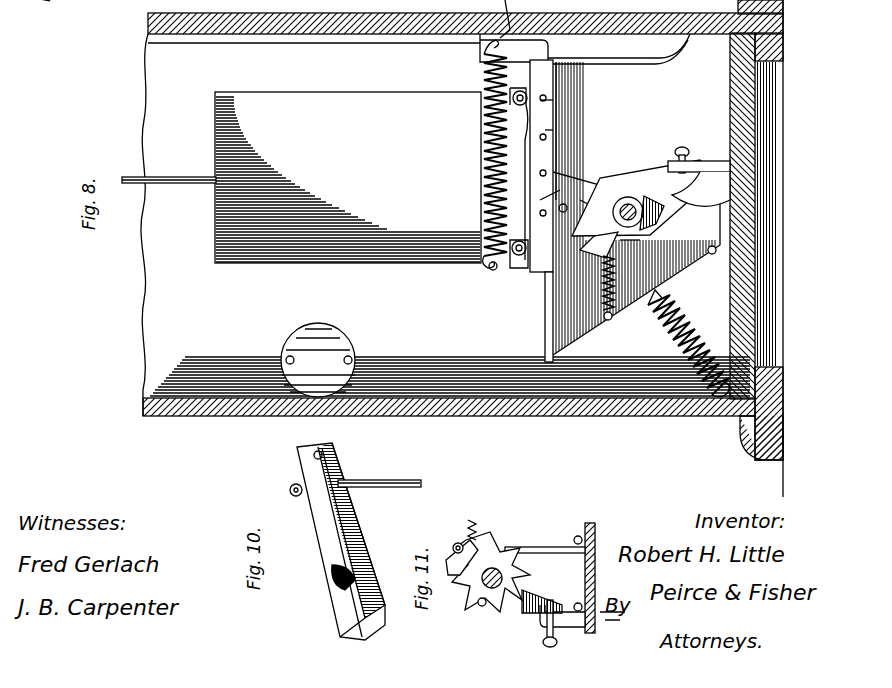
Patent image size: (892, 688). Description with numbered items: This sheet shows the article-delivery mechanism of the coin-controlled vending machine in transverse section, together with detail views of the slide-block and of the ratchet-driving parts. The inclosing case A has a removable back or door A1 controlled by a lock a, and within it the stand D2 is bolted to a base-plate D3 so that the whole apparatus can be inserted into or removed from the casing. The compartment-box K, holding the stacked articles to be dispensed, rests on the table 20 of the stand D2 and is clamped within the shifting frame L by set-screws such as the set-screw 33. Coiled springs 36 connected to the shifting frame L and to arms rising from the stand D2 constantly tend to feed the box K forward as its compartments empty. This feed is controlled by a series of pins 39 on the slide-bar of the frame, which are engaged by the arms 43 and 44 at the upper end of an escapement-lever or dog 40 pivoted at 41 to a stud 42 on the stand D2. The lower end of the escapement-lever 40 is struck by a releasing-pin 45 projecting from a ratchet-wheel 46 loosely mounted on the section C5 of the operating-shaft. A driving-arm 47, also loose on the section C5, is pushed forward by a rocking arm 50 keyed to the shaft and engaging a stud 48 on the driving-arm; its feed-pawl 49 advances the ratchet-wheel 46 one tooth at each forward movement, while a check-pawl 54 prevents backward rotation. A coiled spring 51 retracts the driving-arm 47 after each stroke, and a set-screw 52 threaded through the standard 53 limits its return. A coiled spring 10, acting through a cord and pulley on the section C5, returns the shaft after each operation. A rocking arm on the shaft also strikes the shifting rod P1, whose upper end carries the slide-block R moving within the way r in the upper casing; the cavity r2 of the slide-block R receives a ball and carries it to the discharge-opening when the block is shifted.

In FIG. 8, the body of the inclosing case A is at (240, 416).
In FIG. 8, the removable back or door A1 is at (215, 326).
In FIG. 8, the lock a is at (318, 360).
In FIG. 8, the compartment-box K is at (348, 177).
In FIG. 8, the shifting rod P1 is at (180, 176).
In FIG. 10, the shifting rod P1 is at (372, 480).
In FIG. 8, the coiled springs 36 is at (492, 270).
In FIG. 8, the shifting frame L is at (544, 115).
In FIG. 8, the stand D2 is at (636, 208).
In FIG. 11, the base-plate D3 is at (583, 515).
In FIG. 8, the table 20 is at (546, 318).
In FIG. 8, the set-screw 33 is at (512, 262).
In FIG. 8, the pins 39 is at (560, 110).
In FIG. 8, the stud 42 is at (560, 131).
In FIG. 8, the escapement-lever or dog 40 is at (580, 182).
In FIG. 8, the arm 44 is at (542, 140).
In FIG. 8, the pivot 41 is at (540, 195).
In FIG. 8, the arm 43 is at (558, 208).
In FIG. 8, the stud 48 is at (596, 200).
In FIG. 8, the ratchet-wheel 46 is at (626, 196).
In FIG. 11, the ratchet-wheel 46 is at (492, 566).
In FIG. 8, the driving-arm 47 is at (654, 196).
In FIG. 11, the driving-arm 47 is at (545, 590).
In FIG. 8, the set-screw 52 is at (676, 142).
In FIG. 11, the set-screw 52 is at (548, 650).
In FIG. 8, the standard 53 is at (700, 160).
In FIG. 11, the standard 53 is at (570, 630).
In FIG. 8, the feed-pawl 49 is at (578, 246).
In FIG. 11, the feed-pawl 49 is at (452, 572).
In FIG. 8, the rocking arm 50 is at (630, 262).
In FIG. 8, the releasing-pin 45 is at (688, 259).
In FIG. 11, the releasing-pin 45 is at (480, 606).
In FIG. 8, the coiled spring 51 is at (602, 288).
In FIG. 11, the coiled spring 51 is at (466, 520).
In FIG. 8, the coiled spring 10 is at (688, 343).
In FIG. 10, the slide-block R is at (335, 541).
In FIG. 10, the way r is at (296, 490).
In FIG. 10, the cavity r2 is at (360, 580).
In FIG. 11, the check-pawl 54 is at (545, 547).
In FIG. 11, the section of the operating-shaft C5 is at (496, 548).